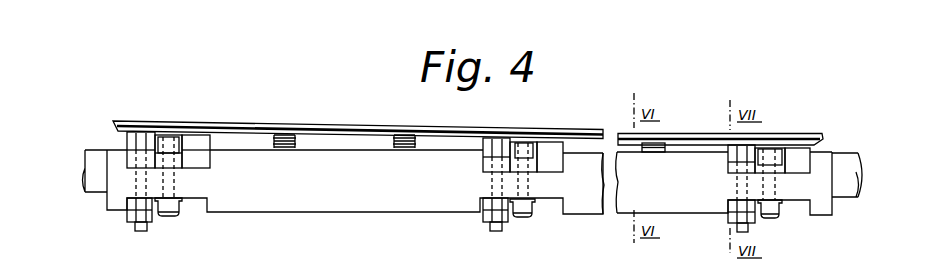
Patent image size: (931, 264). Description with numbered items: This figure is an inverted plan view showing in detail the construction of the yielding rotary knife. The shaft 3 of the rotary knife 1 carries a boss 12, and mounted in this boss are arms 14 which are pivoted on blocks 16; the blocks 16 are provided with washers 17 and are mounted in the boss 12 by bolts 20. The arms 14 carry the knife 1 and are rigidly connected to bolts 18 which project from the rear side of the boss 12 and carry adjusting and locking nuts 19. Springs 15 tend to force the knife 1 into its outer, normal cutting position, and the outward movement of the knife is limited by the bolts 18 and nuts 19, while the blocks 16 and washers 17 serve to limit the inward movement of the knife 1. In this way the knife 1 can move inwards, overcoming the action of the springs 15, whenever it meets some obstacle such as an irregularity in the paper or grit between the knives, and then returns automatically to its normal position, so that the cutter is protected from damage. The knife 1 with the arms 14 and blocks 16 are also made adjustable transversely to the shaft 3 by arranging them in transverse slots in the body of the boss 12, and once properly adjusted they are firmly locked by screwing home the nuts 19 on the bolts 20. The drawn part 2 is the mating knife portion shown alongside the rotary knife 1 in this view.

The rotary knife 1 is at (359, 132).
The rail section 2 is at (572, 128).
The shaft 3 is at (843, 163).
The boss 12 is at (317, 212).
The arms 14 is at (192, 160).
The springs 15 is at (286, 136).
The blocks 16 is at (155, 146).
The washers 17 is at (170, 158).
The bolts 18 is at (495, 182).
The adjusting and locking nuts 19 is at (488, 217).
The bolts 20 is at (525, 185).